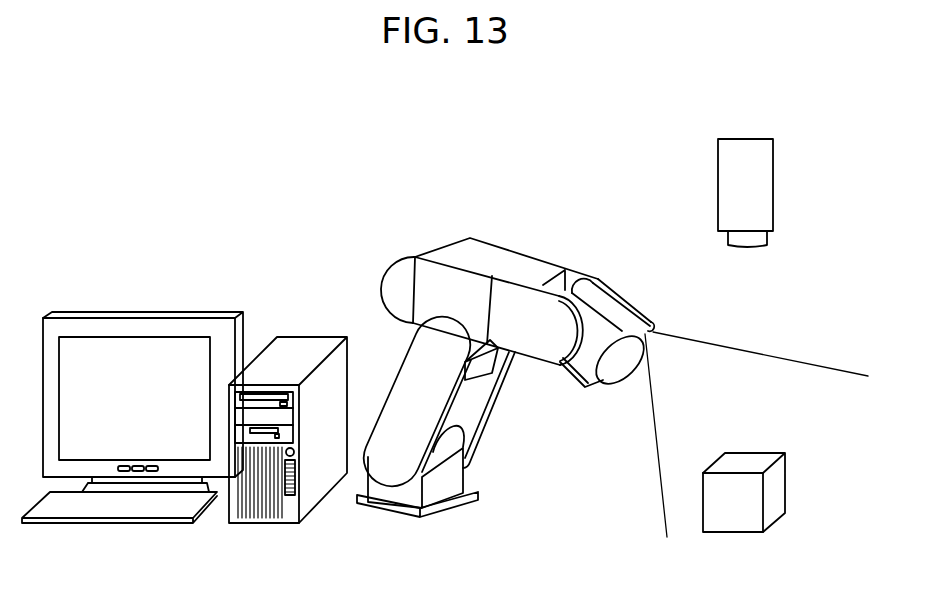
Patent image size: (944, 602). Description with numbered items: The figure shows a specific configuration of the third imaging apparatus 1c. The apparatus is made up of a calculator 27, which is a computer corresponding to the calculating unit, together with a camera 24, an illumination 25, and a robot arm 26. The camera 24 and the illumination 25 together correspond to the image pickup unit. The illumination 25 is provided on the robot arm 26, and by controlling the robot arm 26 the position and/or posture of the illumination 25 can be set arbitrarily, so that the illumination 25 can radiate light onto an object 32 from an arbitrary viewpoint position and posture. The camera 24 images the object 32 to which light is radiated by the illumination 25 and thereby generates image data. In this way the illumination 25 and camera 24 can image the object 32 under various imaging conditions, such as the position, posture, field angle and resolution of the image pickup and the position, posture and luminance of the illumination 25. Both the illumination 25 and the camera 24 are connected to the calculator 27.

The third imaging apparatus 1c is at (297, 193).
The camera 24 is at (749, 137).
The illumination 25 is at (650, 316).
The robot arm 26 is at (505, 242).
The calculator 27 is at (147, 313).
The object 32 is at (750, 452).